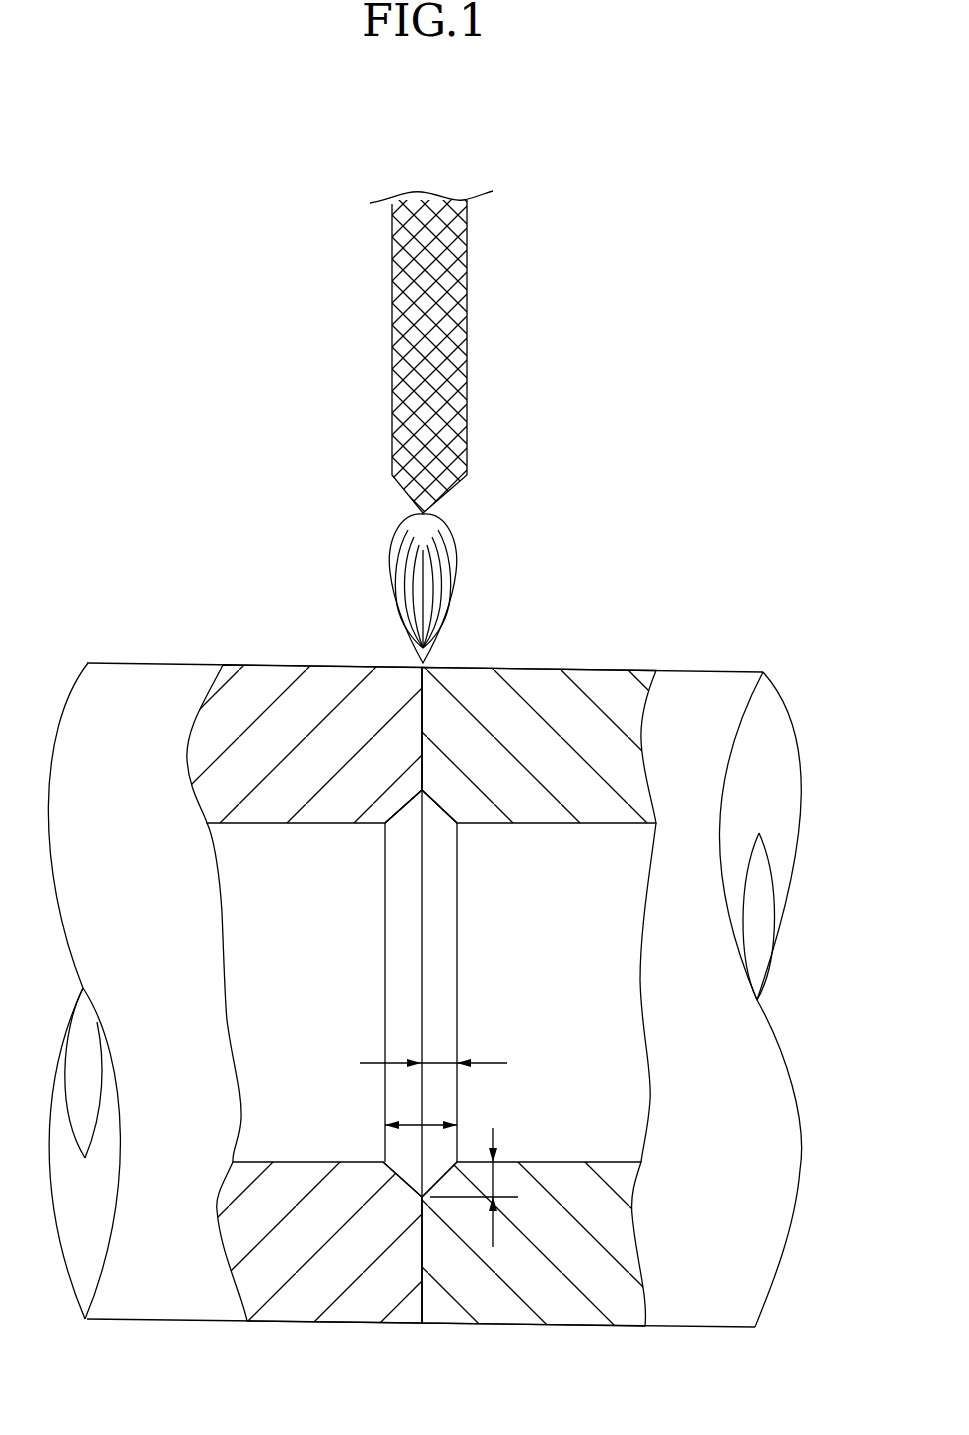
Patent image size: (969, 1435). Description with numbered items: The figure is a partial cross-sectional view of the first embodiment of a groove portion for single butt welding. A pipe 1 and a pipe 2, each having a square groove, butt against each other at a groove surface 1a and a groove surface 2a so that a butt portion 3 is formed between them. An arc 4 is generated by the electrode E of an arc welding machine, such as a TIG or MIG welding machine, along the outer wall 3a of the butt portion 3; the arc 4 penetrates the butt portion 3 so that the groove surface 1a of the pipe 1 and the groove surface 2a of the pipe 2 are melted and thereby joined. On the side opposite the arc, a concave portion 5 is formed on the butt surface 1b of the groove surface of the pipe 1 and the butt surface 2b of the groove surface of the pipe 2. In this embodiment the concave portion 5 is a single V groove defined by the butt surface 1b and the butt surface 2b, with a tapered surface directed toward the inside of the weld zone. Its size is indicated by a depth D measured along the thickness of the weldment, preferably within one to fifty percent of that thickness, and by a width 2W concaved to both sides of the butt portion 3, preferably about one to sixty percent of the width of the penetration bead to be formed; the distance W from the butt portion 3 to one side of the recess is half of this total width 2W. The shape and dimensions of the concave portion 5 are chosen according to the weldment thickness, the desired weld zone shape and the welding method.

The pipe 1 is at (137, 690).
The pipe 2 is at (708, 690).
The groove surface 1a is at (422, 760).
The groove surface 2a is at (425, 752).
The butt surface 1b is at (418, 830).
The butt surface 2b is at (460, 853).
The butt portion 3 is at (425, 702).
The outer wall 3a is at (422, 665).
The arc 4 is at (453, 540).
The concave portion 5 is at (437, 873).
The electrode E is at (467, 290).
The half width of concave portion W is at (435, 1062).
The width of concave portion 2W is at (410, 1118).
The depth of concave portion D is at (493, 1180).